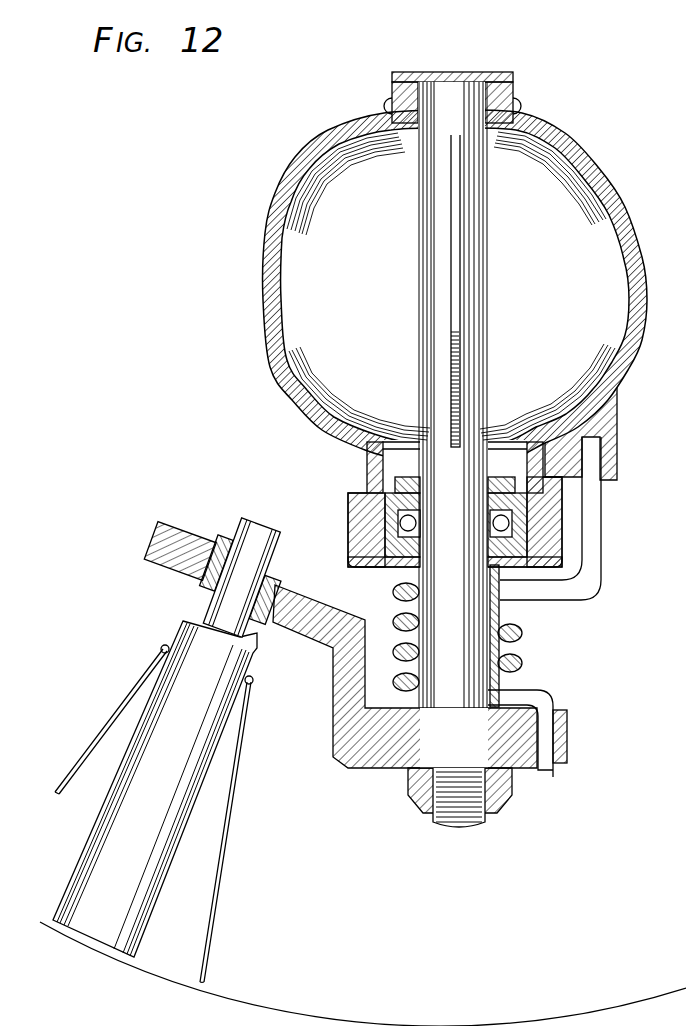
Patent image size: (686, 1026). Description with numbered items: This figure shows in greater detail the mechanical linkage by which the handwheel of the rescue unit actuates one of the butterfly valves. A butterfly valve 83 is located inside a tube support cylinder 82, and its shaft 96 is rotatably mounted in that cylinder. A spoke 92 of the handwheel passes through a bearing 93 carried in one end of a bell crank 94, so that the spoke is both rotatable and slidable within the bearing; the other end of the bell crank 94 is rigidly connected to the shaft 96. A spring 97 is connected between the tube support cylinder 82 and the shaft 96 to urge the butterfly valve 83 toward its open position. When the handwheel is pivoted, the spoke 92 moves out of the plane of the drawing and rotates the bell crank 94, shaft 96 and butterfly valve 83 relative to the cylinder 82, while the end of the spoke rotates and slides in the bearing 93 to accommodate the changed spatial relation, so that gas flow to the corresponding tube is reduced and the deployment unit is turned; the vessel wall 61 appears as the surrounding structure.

The vessel wall 61 is at (363, 874).
The tube support cylinder 82 is at (627, 362).
The butterfly valve 83 is at (460, 268).
The spoke 92 is at (145, 917).
The bearing 93 is at (277, 573).
The bell crank 94 is at (383, 770).
The shaft 96 is at (493, 615).
The spring 97 is at (522, 665).